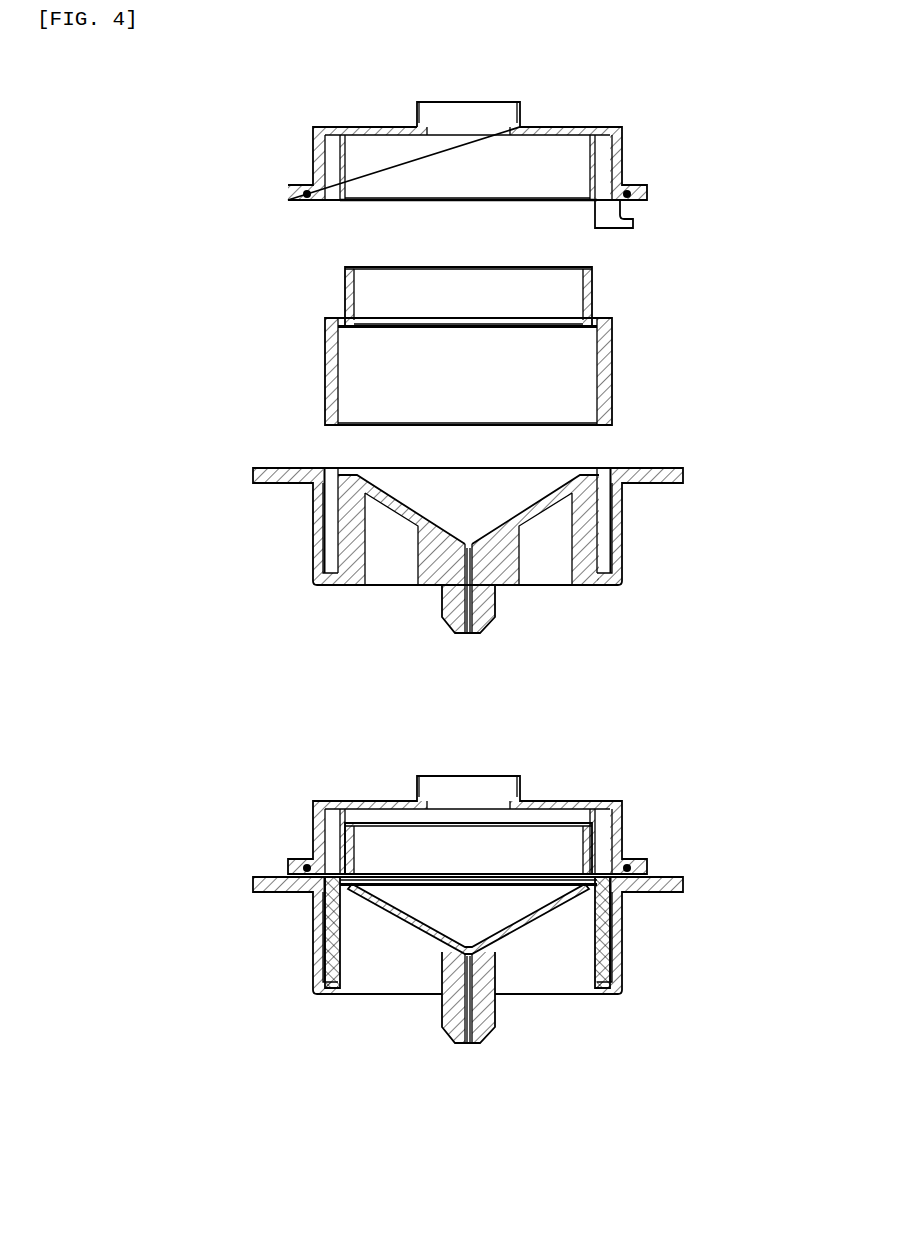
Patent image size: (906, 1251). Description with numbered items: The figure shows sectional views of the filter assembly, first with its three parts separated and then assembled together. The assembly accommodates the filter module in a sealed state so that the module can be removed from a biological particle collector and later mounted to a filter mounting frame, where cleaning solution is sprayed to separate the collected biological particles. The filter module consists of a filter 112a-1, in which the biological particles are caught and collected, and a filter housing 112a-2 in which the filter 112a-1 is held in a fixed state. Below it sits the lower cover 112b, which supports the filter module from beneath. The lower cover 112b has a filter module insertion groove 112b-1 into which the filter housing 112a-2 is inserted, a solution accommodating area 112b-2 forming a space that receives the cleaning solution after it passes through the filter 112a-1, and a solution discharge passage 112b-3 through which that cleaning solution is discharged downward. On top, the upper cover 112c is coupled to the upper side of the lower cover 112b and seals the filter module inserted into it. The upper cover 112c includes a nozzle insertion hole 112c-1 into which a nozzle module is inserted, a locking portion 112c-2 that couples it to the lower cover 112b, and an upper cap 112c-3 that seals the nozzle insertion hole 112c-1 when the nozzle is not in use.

The upper cover 112c is at (534, 475).
The nozzle insertion hole 112c-1 is at (477, 135).
The locking portion 112c-2 is at (633, 219).
The upper cap 112c-3 is at (468, 102).
The filter 112a-1 is at (467, 328).
The filter housing 112a-2 is at (592, 288).
The lower cover 112b is at (497, 796).
The filter module insertion groove 112b-1 is at (603, 518).
The solution accommodating area 112b-2 is at (407, 489).
The solution discharge passage 112b-3 is at (470, 606).